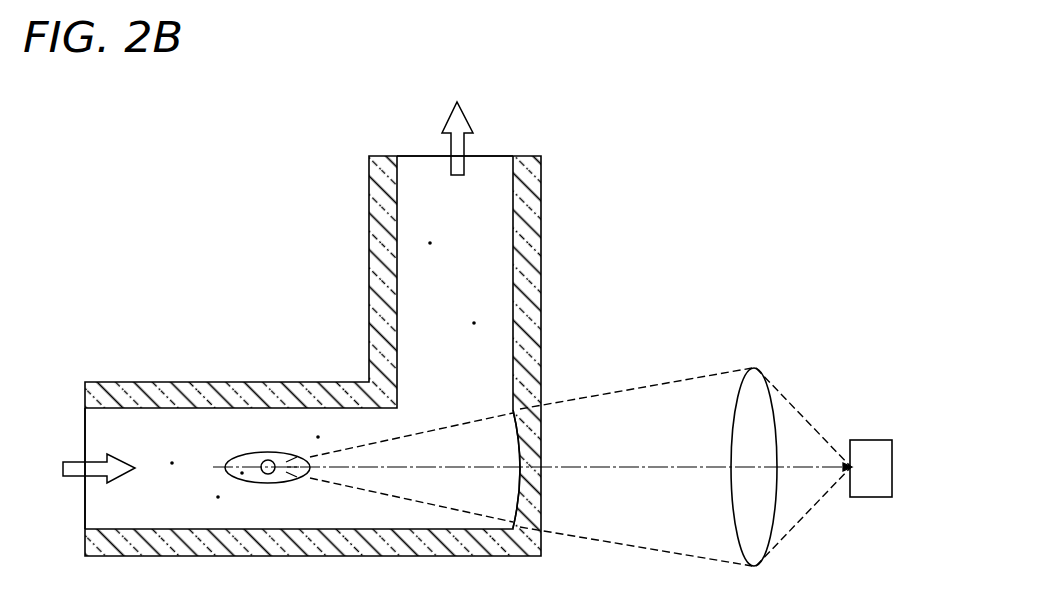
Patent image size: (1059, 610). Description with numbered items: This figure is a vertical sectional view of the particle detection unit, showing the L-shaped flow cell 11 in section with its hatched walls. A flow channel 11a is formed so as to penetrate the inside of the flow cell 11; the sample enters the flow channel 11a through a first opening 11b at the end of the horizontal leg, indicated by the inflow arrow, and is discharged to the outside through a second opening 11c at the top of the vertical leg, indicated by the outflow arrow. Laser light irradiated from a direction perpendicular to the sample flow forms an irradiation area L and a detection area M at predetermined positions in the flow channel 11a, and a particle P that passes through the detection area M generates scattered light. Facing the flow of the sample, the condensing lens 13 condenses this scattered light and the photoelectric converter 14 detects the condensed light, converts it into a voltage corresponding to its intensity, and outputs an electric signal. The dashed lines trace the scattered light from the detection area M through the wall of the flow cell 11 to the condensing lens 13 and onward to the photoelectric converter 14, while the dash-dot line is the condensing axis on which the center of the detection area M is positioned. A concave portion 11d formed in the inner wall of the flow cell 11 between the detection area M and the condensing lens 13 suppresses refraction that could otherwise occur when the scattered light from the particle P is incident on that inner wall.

The flow cell 11 is at (541, 190).
The flow channel 11a is at (134, 432).
The first opening 11b is at (84, 513).
The second opening 11c is at (491, 157).
The concave portion 11d is at (520, 430).
The condensing lens 13 is at (773, 412).
The photoelectric converter 14 is at (866, 440).
The irradiation area L is at (248, 452).
The detection area M is at (265, 475).
The particle P is at (172, 464).